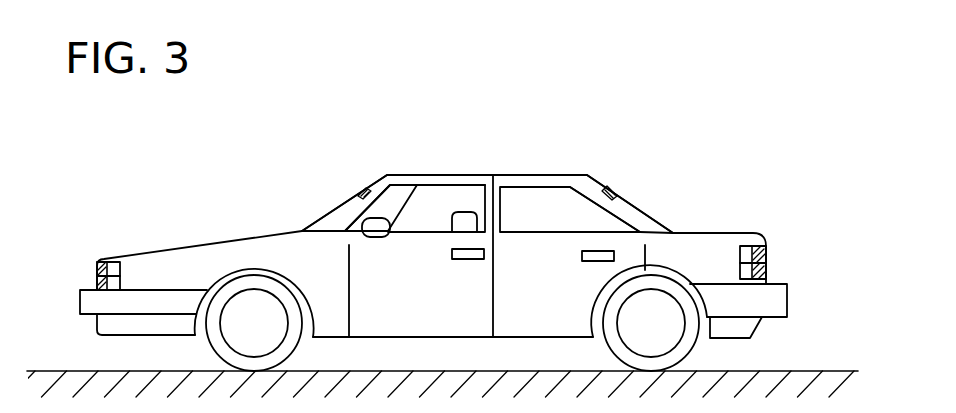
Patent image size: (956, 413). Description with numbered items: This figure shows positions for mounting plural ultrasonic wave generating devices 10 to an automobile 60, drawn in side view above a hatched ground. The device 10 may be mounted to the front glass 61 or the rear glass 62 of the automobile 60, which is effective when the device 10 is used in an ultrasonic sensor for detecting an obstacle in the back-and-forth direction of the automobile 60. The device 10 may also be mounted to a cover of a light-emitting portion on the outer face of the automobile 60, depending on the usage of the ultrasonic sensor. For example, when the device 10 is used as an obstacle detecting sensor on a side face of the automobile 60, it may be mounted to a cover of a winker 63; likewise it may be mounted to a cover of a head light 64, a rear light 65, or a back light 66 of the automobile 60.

The ultrasonic wave generating device 10 is at (96, 268).
The automobile 60 is at (494, 157).
The front glass 61 is at (330, 208).
The rear glass 62 is at (633, 202).
The winker 63 is at (107, 290).
The head light 64 is at (117, 262).
The rear light 65 is at (750, 246).
The back light 66 is at (749, 279).